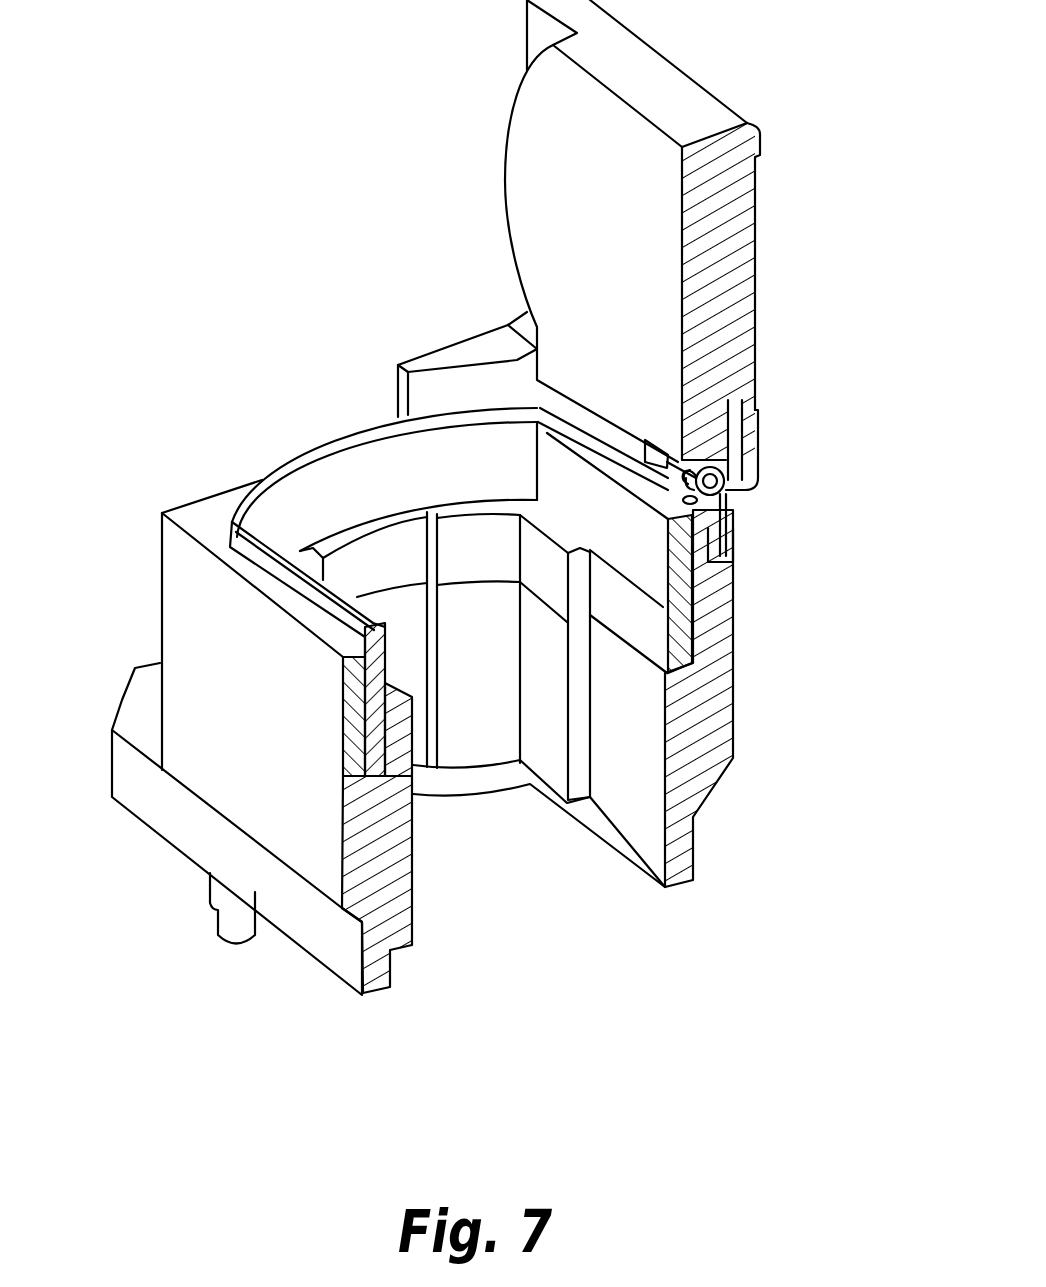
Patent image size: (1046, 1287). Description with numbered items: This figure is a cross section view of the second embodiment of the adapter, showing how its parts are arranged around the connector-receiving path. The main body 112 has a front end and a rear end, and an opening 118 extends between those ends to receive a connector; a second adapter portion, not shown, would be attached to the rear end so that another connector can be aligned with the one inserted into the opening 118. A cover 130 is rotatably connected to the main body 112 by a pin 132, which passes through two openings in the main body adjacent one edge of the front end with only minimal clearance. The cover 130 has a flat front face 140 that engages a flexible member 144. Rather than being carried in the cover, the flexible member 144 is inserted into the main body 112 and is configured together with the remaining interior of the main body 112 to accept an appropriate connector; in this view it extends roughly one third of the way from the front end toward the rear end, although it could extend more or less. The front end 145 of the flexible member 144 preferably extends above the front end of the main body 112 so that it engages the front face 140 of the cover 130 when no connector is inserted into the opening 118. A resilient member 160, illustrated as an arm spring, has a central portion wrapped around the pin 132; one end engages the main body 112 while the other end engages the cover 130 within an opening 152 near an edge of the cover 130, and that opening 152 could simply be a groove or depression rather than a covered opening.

The main body 112 is at (733, 723).
The opening 118 is at (553, 887).
The cover 130 is at (753, 245).
The pin 132 is at (723, 518).
The flat front face 140 is at (507, 177).
The flexible member 144 is at (647, 633).
The front end of the flexible member 145 is at (337, 612).
The opening 152 is at (753, 380).
The resilient member 160 is at (733, 495).